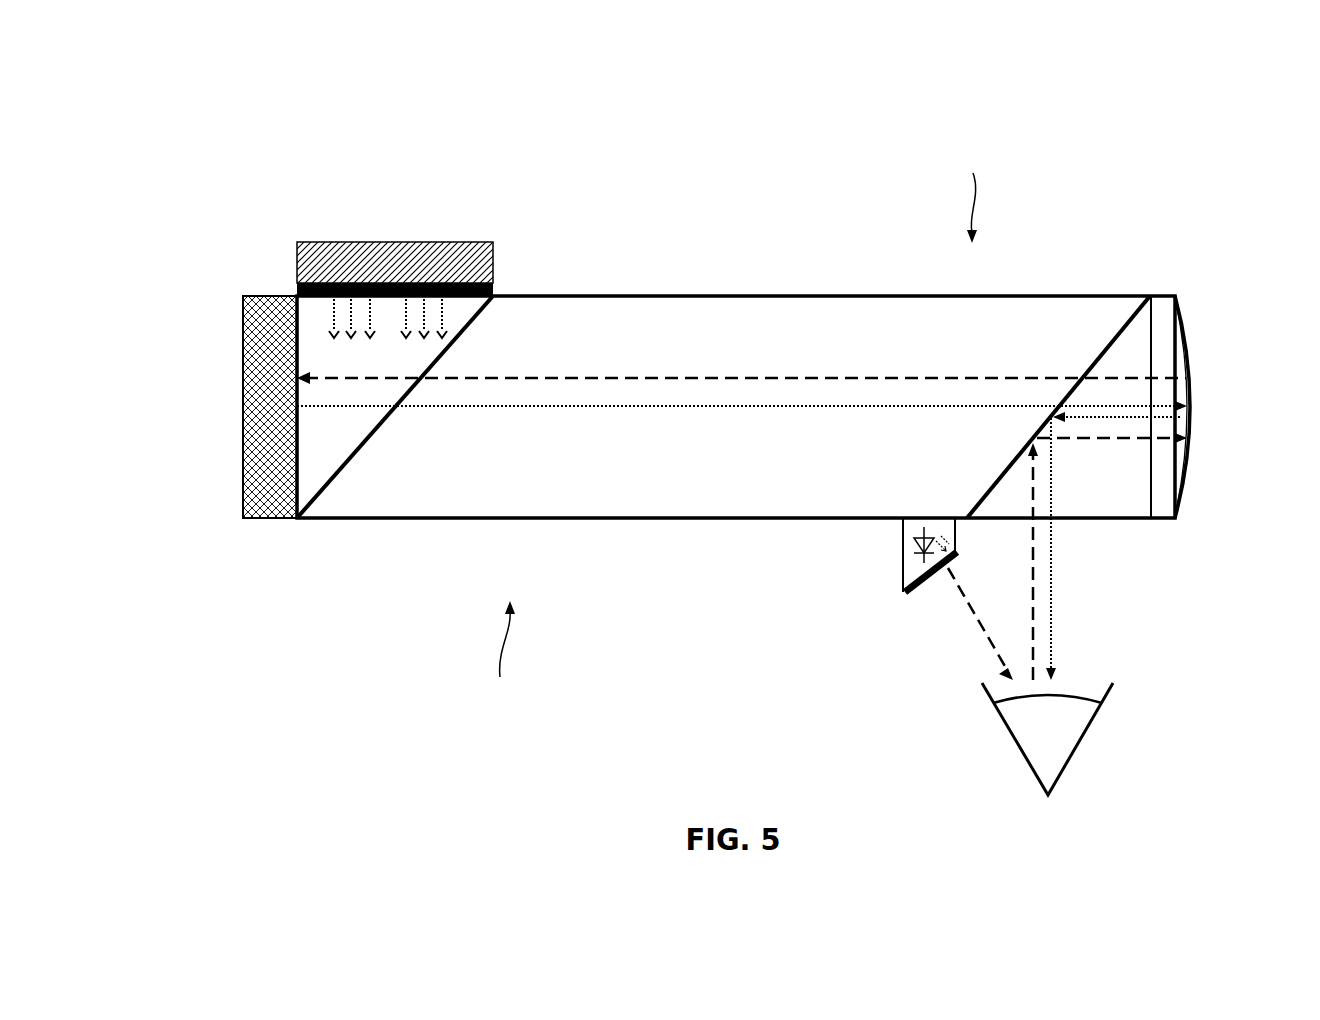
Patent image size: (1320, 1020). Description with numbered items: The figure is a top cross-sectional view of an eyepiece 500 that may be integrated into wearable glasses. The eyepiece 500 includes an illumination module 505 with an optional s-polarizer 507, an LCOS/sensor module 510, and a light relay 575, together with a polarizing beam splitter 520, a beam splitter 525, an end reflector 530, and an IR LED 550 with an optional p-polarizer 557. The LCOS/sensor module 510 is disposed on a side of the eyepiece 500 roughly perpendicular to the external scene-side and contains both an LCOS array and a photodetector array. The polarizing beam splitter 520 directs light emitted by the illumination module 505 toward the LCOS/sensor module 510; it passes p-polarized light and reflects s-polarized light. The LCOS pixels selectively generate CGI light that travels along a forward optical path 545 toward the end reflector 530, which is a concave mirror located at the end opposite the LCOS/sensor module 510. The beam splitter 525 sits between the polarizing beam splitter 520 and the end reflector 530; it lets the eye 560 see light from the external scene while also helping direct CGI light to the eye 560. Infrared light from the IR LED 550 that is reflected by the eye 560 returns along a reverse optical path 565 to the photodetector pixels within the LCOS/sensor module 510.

The eyepiece 500 is at (1200, 258).
The illumination module 505 is at (407, 268).
The optional s-polarizer 507 is at (494, 288).
The LCOS/sensor module 510 is at (243, 298).
The polarizing beam splitter 520 is at (322, 505).
The beam splitter 525 is at (1128, 295).
The end reflector 530 is at (1192, 413).
The forward optical path 545 is at (762, 407).
The IR LED 550 is at (912, 564).
The optional p-polarizer 557 is at (905, 595).
The eye 560 is at (1036, 757).
The reverse optical path 565 is at (757, 377).
The light relay 575 is at (672, 295).